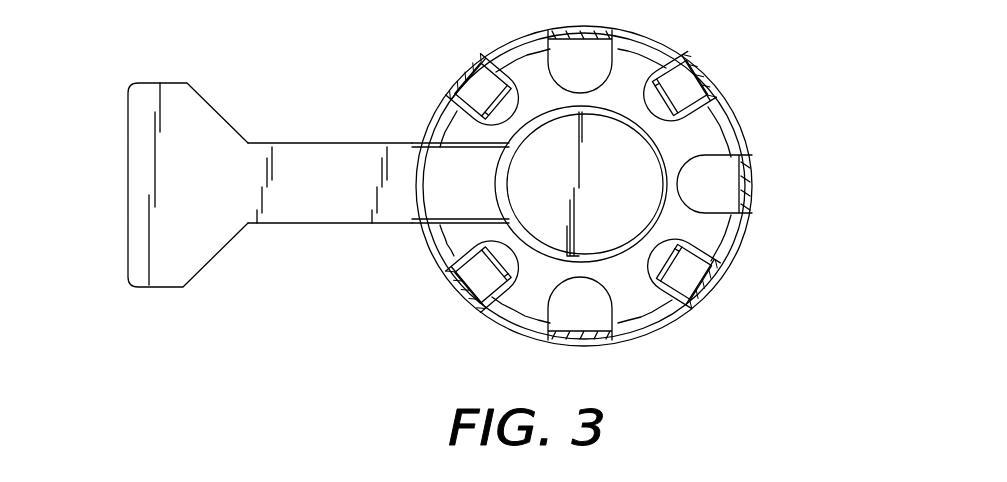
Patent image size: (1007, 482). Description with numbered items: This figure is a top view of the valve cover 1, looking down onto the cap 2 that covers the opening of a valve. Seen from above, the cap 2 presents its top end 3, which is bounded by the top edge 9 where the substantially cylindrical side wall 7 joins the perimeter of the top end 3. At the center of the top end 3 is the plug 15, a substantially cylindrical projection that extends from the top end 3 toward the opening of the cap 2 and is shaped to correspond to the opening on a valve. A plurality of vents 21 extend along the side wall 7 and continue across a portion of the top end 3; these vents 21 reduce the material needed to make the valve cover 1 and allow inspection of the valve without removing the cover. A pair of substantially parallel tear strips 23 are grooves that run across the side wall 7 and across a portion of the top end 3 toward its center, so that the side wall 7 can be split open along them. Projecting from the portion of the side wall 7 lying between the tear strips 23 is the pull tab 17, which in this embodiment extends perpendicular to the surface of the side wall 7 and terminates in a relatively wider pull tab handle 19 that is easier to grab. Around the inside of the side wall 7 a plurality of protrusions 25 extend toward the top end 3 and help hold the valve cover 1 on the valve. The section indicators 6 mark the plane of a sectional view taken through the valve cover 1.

The valve cover 1 is at (266, 311).
The cap 2 is at (490, 332).
The top end 3 is at (618, 80).
The section line 6 is at (115, 185).
The side wall 7 is at (747, 226).
The top edge 9 is at (733, 257).
The plug 15 is at (581, 190).
The pull tab 17 is at (281, 239).
The pull tab handle 19 is at (147, 210).
The vents 21 is at (748, 193).
The tear strips 23 is at (425, 134).
The protrusions 25 is at (462, 82).